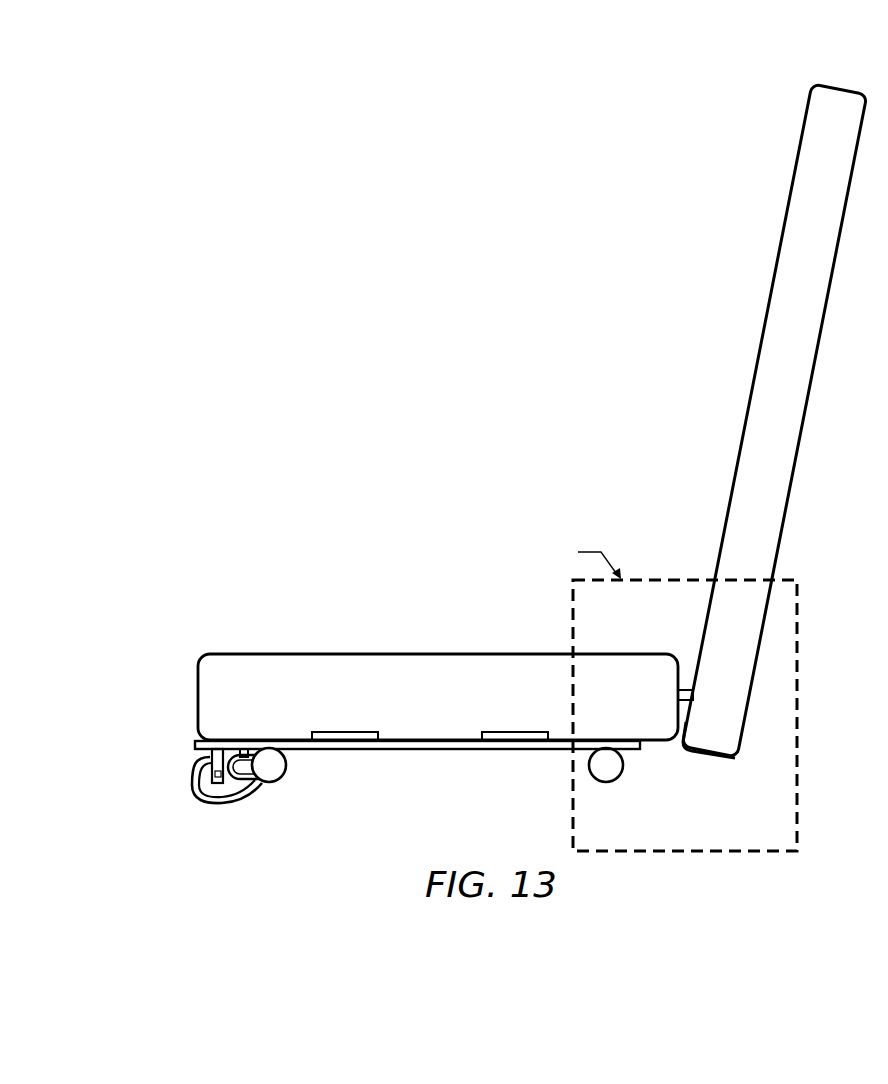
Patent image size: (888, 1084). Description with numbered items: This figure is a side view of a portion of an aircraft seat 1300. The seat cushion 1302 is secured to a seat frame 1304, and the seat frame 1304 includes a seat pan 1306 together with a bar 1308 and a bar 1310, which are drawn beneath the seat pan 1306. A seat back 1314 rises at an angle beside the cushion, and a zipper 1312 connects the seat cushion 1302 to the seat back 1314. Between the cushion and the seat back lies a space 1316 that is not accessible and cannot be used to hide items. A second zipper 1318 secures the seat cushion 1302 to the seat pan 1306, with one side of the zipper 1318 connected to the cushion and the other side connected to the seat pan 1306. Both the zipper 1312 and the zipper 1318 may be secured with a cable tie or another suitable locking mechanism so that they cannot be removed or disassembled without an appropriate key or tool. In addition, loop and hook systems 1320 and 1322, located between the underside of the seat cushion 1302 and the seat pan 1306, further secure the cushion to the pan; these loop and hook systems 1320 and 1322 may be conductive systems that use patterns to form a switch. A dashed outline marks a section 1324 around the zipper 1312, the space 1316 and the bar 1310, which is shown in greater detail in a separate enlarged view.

The aircraft seat 1300 is at (396, 669).
The seat cushion 1302 is at (235, 652).
The seat frame 1304 is at (435, 753).
The seat pan 1306 is at (354, 750).
The bar 1308 is at (278, 783).
The bar 1310 is at (612, 782).
The zipper 1312 is at (688, 690).
The seat back 1314 is at (800, 140).
The space 1316 is at (686, 720).
The zipper 1318 is at (193, 748).
The loop and hook system 1320 is at (330, 724).
The loop and hook system 1322 is at (516, 724).
The section 1324 is at (797, 748).